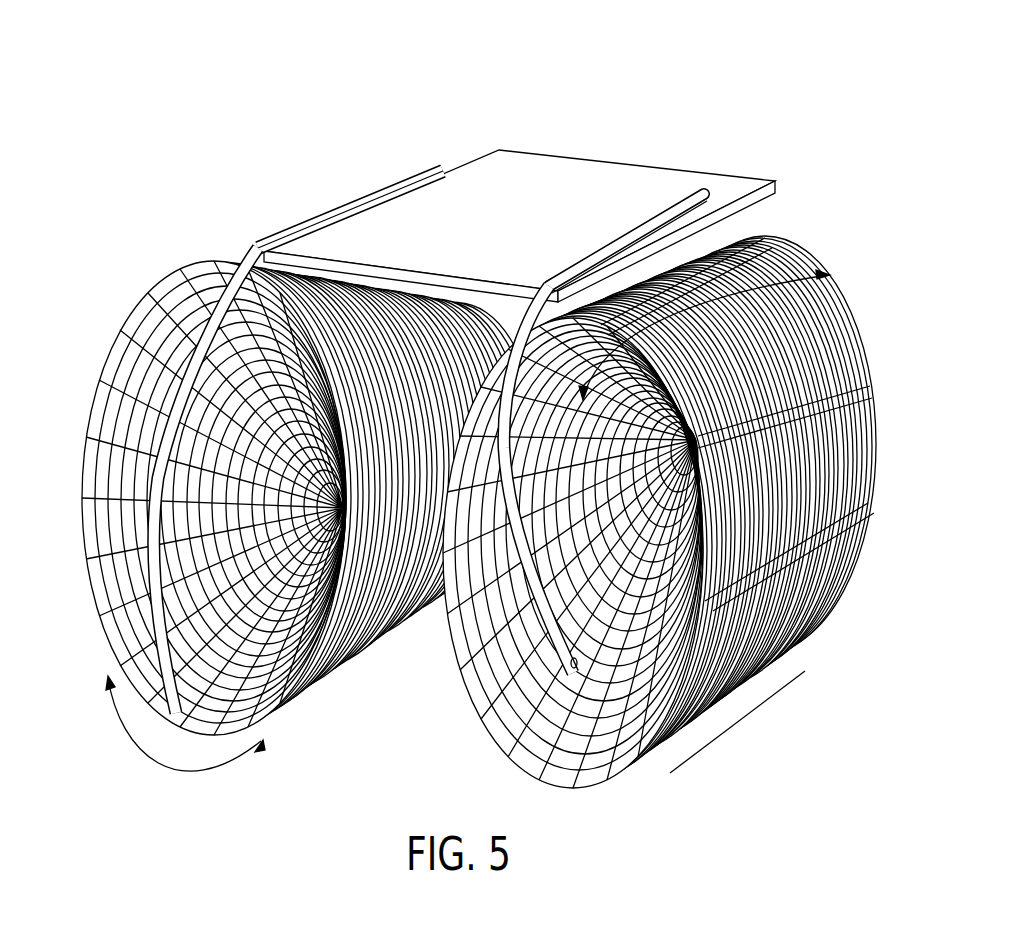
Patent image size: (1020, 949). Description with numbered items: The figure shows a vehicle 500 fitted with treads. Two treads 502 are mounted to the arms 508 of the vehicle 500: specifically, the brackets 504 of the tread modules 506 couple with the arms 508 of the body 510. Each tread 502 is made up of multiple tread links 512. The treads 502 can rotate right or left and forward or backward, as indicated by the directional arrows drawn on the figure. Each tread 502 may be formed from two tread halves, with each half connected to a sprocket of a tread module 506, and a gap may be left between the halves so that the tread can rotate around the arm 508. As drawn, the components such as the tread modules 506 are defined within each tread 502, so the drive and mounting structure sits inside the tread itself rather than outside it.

The vehicle 500 is at (290, 86).
The tread 502 is at (740, 710).
The bracket 504 is at (150, 430).
The tread module 506 is at (820, 337).
The arm 508 is at (240, 267).
The body 510 is at (614, 192).
The tread link 512 is at (77, 460).